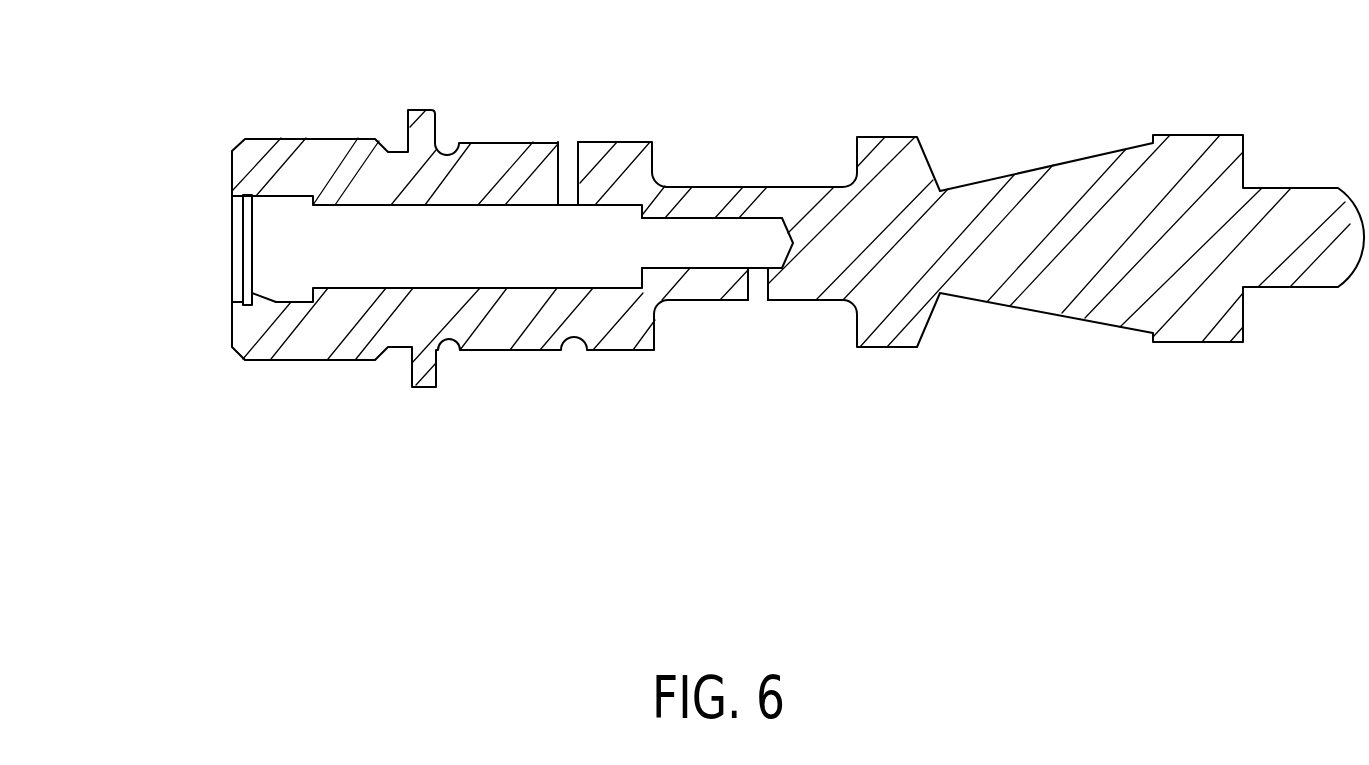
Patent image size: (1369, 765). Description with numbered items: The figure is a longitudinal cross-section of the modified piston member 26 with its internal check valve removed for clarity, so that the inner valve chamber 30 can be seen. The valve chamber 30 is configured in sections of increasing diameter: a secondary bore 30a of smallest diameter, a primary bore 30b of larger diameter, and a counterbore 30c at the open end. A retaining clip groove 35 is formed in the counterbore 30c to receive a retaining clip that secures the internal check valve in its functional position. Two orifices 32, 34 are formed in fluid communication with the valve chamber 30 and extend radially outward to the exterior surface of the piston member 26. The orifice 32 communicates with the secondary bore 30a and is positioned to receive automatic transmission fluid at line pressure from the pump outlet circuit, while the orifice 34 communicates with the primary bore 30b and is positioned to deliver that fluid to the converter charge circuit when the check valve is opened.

The piston member 26 is at (1088, 157).
The valve chamber 30 is at (263, 250).
The secondary bore 30a is at (705, 217).
The primary bore 30b is at (523, 290).
The counterbore 30c is at (243, 290).
The orifice 32 is at (757, 295).
The orifice 34 is at (572, 162).
The retaining clip groove 35 is at (243, 225).